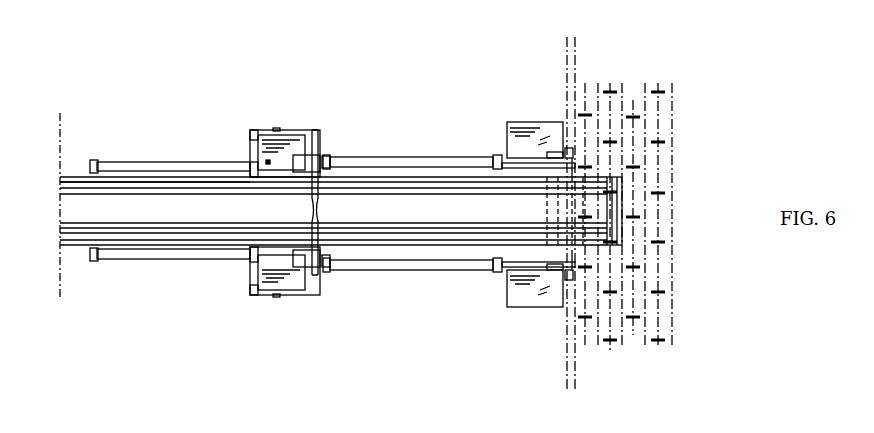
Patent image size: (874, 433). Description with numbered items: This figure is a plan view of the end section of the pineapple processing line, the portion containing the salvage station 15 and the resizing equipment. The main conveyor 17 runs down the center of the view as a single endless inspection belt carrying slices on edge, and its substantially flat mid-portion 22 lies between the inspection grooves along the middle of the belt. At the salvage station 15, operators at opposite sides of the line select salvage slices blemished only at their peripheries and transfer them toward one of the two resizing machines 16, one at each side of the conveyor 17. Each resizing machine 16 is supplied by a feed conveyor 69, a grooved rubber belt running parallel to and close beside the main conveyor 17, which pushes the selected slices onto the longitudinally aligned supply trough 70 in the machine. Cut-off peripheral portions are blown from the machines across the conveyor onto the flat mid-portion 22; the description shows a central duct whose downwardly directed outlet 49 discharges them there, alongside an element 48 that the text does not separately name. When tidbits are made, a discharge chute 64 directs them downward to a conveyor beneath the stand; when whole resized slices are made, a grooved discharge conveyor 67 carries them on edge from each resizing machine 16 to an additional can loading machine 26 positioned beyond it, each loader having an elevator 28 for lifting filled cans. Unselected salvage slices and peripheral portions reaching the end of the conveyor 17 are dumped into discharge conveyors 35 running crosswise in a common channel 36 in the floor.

The salvage station 15 is at (77, 163).
The resizing machine 16 is at (280, 129).
The main conveyor 17 is at (139, 216).
The flat mid-portion of conveyor 22 is at (199, 216).
The can loading machine 26 is at (530, 121).
The elevator 28 is at (576, 62).
The discharge conveyor 35 is at (681, 204).
The common channel 36 is at (673, 233).
The rod 48 is at (311, 207).
The outlet of duct 49 is at (320, 213).
The discharge chute 64 is at (331, 171).
The discharge conveyor 67 is at (397, 157).
The feed conveyor 69 is at (165, 161).
The supply trough 70 is at (278, 167).